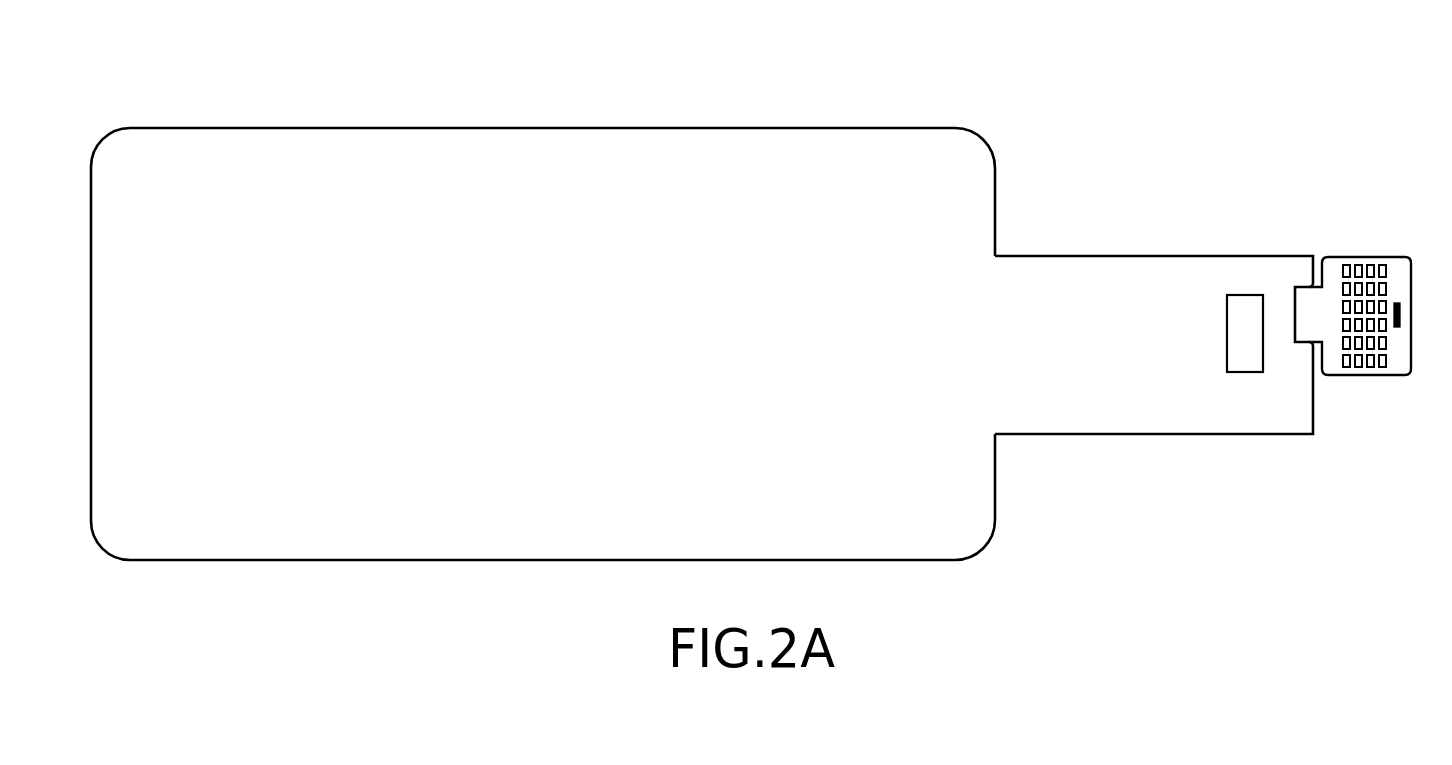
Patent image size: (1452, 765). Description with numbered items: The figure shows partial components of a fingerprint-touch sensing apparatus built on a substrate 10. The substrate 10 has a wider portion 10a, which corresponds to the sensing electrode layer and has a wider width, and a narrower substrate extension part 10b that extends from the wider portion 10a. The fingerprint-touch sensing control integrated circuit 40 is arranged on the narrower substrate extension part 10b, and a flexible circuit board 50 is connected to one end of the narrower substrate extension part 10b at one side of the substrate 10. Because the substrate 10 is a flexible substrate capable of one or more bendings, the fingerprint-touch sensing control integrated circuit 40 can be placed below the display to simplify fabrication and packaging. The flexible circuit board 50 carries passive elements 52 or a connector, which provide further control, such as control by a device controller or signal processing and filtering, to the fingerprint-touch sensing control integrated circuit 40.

The substrate 10 is at (1117, 78).
The wider portion 10a is at (888, 140).
The narrower substrate extension part 10b is at (1118, 278).
The fingerprint-touch sensing control integrated circuit 40 is at (1243, 307).
The flexible circuit board 50 is at (1375, 319).
The passive elements 52 is at (1360, 270).